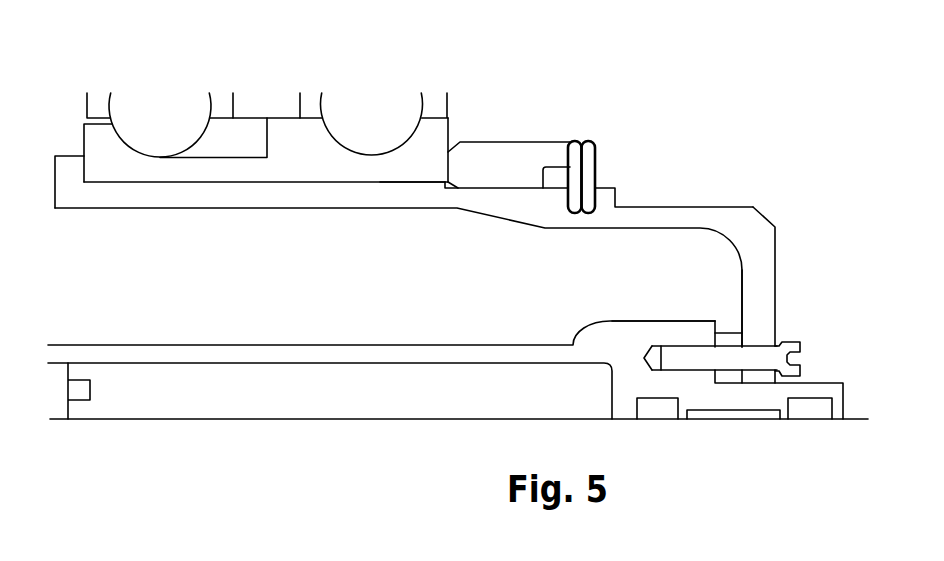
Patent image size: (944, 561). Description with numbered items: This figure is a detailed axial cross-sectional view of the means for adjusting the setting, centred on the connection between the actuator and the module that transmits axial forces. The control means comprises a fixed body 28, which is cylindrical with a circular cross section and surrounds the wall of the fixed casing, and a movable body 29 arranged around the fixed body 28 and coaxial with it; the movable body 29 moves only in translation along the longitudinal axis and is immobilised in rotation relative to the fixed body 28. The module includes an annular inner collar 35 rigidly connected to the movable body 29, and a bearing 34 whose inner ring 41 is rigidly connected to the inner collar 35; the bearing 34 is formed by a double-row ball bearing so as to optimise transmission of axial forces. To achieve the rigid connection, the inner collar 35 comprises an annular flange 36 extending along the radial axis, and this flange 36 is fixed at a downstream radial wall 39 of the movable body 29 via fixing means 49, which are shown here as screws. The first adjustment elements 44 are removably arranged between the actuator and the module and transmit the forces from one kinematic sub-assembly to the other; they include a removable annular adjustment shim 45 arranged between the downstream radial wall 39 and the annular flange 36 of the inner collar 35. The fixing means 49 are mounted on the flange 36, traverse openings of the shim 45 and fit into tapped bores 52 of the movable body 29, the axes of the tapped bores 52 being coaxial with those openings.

The fixed body 28 is at (343, 437).
The movable body 29 is at (408, 355).
The bearing 34 is at (400, 78).
The inner collar 35 is at (660, 217).
The annular flange 36 is at (765, 250).
The downstream radial wall 39 is at (693, 335).
The inner ring 41 is at (428, 158).
The first adjustment elements 44 is at (728, 318).
The adjustment shim 45 is at (730, 377).
The fixing means 49 is at (812, 355).
The tapped bores 52 is at (648, 358).